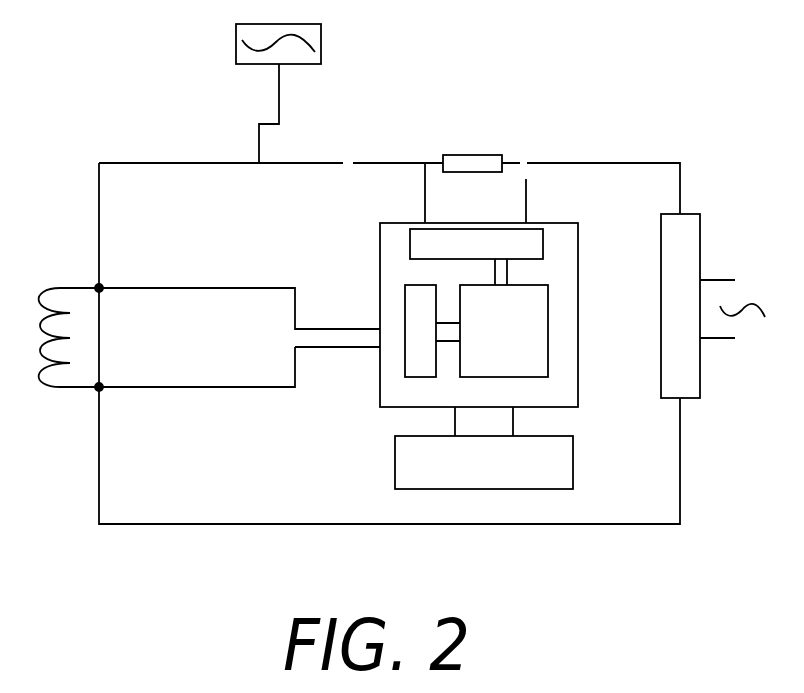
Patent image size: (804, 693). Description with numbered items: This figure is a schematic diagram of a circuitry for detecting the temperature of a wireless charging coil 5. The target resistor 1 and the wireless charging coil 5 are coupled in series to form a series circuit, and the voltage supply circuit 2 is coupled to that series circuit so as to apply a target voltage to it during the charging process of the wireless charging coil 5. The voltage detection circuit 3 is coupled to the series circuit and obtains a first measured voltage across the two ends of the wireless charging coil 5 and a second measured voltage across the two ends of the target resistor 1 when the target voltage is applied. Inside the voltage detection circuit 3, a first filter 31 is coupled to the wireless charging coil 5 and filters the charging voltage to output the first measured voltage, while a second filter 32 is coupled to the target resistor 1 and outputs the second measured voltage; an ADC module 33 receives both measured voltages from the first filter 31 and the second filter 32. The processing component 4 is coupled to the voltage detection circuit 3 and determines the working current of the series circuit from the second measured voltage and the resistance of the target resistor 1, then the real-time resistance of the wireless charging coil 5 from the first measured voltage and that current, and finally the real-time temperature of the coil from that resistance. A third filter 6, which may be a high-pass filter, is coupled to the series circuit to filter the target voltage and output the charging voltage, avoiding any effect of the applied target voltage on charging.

The target resistor 1 is at (483, 155).
The voltage supply circuit 2 is at (307, 64).
The voltage detection circuit 3 is at (505, 315).
The processing component 4 is at (575, 460).
The wireless charging coil 5 is at (50, 285).
The third filter 6 is at (690, 265).
The first filter 31 is at (420, 331).
The second filter 32 is at (476, 244).
The ADC module 33 is at (504, 331).